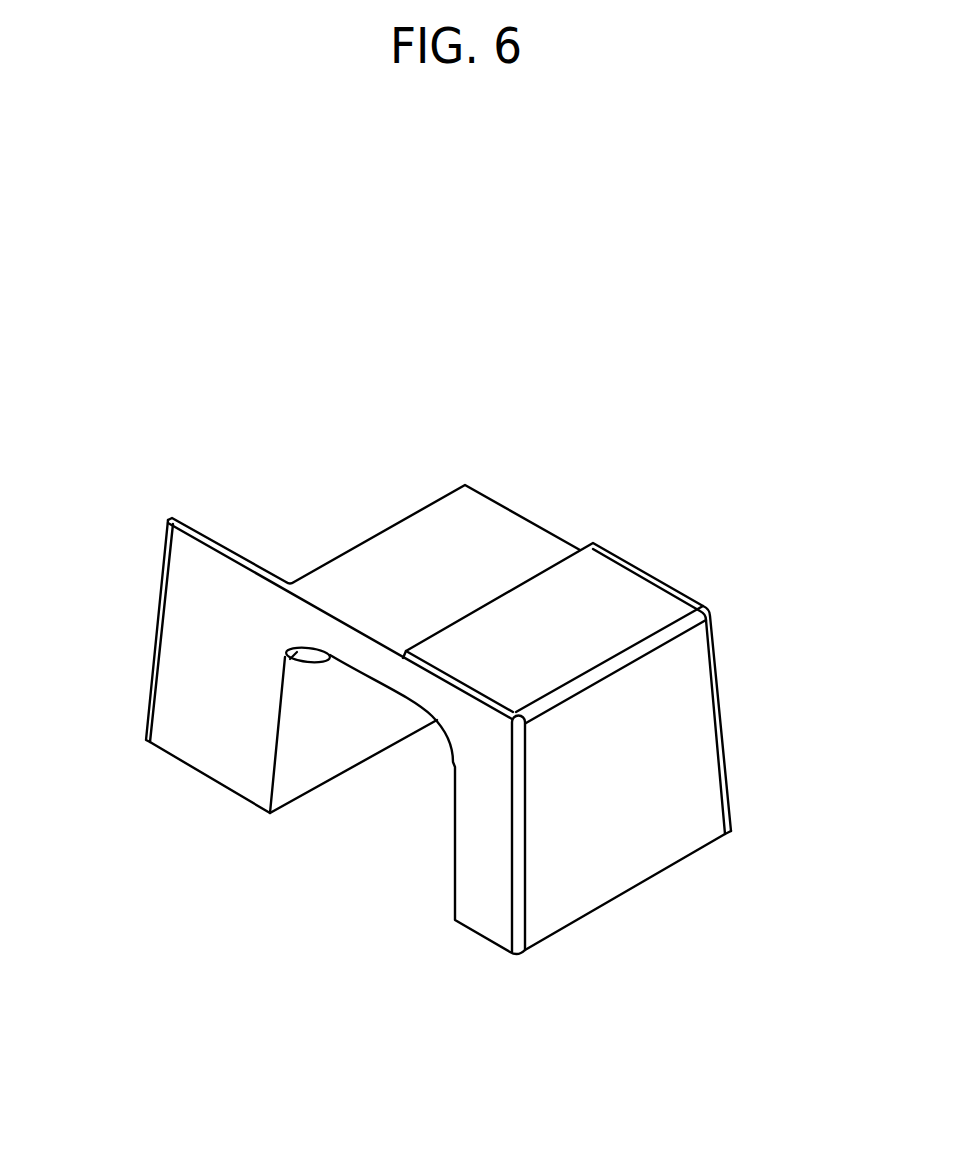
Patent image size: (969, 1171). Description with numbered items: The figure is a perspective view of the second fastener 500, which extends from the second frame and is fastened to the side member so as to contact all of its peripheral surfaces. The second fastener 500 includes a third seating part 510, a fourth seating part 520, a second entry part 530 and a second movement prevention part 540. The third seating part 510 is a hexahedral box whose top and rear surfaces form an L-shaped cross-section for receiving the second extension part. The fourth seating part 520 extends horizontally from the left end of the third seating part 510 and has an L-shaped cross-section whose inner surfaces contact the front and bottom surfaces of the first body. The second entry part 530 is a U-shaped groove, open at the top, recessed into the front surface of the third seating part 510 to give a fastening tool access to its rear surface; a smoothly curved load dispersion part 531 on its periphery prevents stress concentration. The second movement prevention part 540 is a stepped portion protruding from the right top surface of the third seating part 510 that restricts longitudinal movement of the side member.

The second fastener 500 is at (723, 443).
The third seating part 510 is at (412, 583).
The fourth seating part 520 is at (230, 732).
The second entry part 530 is at (418, 817).
The load dispersion part 531 is at (330, 652).
The second movement prevention part 540 is at (597, 610).